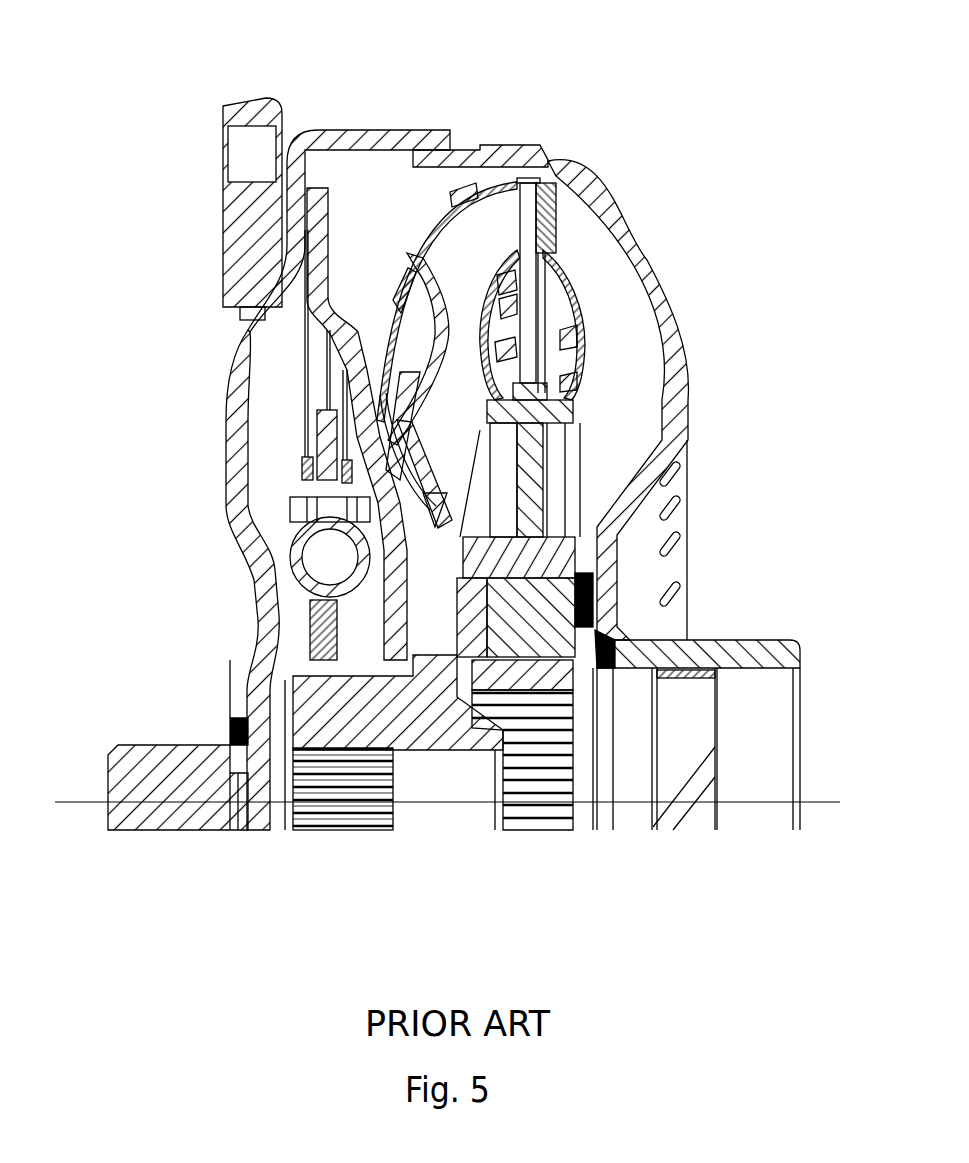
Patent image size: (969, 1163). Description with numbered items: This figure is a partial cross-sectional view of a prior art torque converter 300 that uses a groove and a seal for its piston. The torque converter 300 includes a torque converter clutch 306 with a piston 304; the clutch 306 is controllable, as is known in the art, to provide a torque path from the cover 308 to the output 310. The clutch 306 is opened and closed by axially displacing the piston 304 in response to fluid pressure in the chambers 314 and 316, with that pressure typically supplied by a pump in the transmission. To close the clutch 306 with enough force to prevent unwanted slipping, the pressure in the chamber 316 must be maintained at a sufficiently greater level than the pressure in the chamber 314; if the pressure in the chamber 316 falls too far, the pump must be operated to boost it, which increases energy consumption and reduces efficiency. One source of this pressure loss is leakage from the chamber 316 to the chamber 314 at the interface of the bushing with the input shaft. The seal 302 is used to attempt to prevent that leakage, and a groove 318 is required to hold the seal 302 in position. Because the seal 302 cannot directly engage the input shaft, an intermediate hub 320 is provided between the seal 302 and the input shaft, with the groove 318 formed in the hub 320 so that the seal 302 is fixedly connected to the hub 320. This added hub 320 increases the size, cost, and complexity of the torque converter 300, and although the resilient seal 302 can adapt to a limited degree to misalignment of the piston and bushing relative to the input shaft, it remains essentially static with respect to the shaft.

The torque converter 300 is at (633, 120).
The seal 302 is at (333, 732).
The piston 304 is at (327, 210).
The torque converter clutch 306 is at (317, 187).
The cover 308 is at (238, 358).
The output 310 is at (421, 756).
The chamber 314 is at (273, 430).
The chamber 316 is at (432, 193).
The groove 318 is at (340, 712).
The hub 320 is at (333, 730).